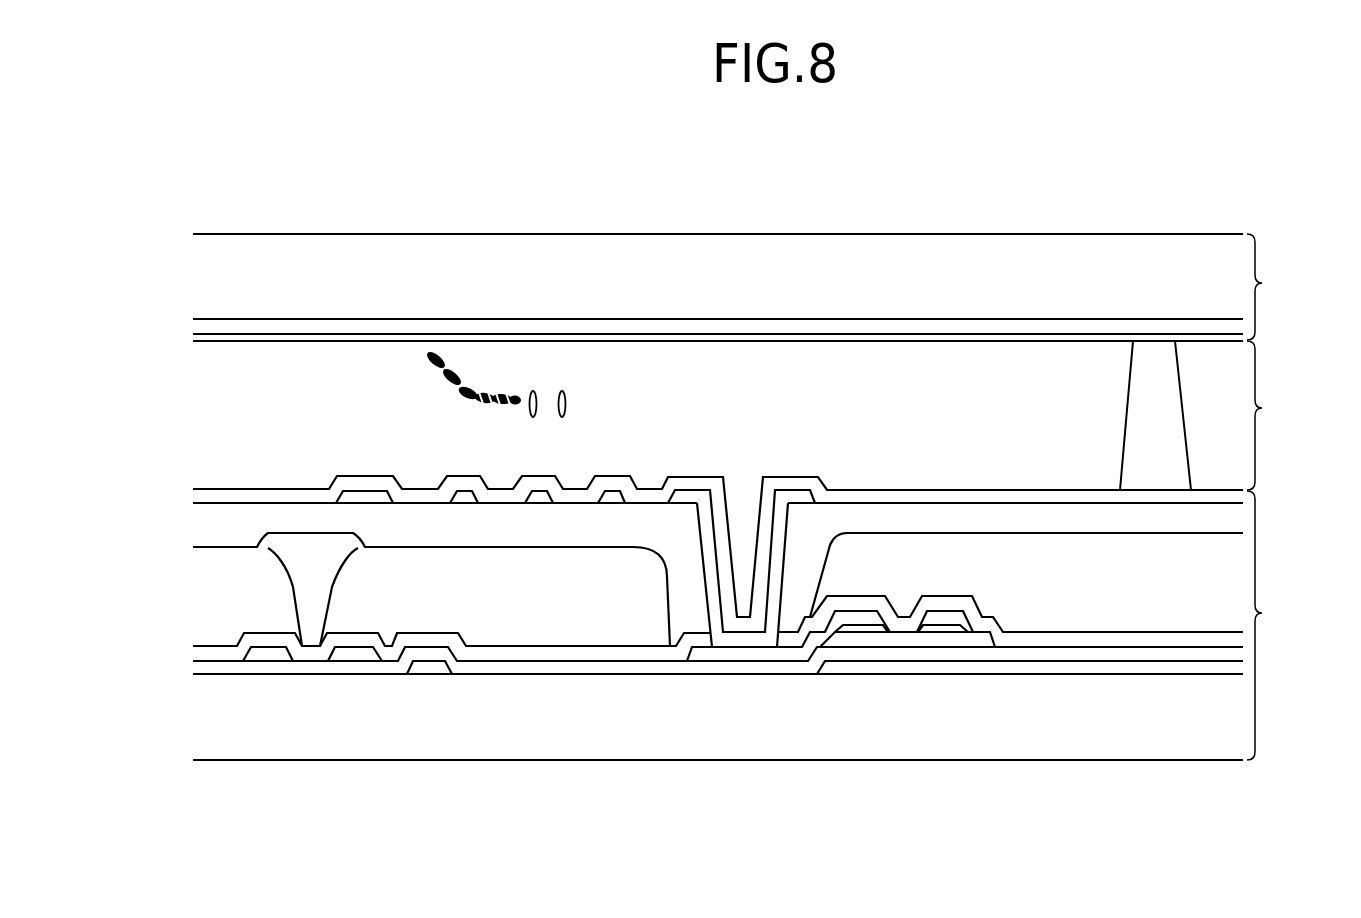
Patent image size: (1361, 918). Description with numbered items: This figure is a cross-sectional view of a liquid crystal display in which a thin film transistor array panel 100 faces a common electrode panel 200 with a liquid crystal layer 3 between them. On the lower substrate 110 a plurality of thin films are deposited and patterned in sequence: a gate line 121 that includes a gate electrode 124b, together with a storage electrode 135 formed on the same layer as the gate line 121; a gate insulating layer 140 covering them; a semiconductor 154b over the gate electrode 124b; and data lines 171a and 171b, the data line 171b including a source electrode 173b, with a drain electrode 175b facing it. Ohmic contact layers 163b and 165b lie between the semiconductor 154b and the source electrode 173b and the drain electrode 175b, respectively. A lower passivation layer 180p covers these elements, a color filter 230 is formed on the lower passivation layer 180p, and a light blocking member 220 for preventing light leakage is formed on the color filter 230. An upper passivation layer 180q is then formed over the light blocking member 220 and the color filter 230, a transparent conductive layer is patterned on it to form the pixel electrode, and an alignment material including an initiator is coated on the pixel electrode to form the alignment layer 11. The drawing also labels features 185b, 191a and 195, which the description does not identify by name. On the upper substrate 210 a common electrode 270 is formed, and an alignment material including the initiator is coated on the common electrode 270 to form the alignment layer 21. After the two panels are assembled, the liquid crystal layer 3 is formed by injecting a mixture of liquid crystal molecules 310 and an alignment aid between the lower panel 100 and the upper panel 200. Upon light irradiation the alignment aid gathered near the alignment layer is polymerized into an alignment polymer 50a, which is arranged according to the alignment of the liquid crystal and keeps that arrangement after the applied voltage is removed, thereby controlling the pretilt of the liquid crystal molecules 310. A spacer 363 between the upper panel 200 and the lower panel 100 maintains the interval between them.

The liquid crystal layer 3 is at (1265, 415).
The alignment layer 11 is at (227, 497).
The alignment layer 21 is at (1016, 338).
The alignment polymer 50a is at (428, 360).
The thin film transistor array panel 100 is at (1278, 625).
The substrate 110 is at (1220, 730).
The gate line 121 is at (1097, 668).
The gate electrode 124b is at (878, 669).
The storage electrode 135 is at (428, 667).
The gate insulating layer 140 is at (718, 668).
The semiconductor 154b is at (908, 642).
The ohmic contact layer 163b is at (937, 628).
The ohmic contact layer 165b is at (857, 630).
The data line 171a is at (266, 653).
The data line 171b is at (352, 653).
The source electrode 173b is at (957, 620).
The drain electrode 175b is at (780, 653).
The lower passivation layer 180p is at (553, 655).
The upper passivation layer 180q is at (608, 530).
The contact hole 185b is at (780, 513).
The pixel electrode 191a is at (465, 497).
The shielding electrode 195 is at (363, 497).
The common electrode panel 200 is at (1278, 287).
The substrate 210 is at (893, 256).
The light blocking member 220 is at (308, 557).
The color filter 230 is at (493, 597).
The common electrode 270 is at (757, 327).
The liquid crystal molecules 310 is at (563, 393).
The spacer 363 is at (1155, 360).